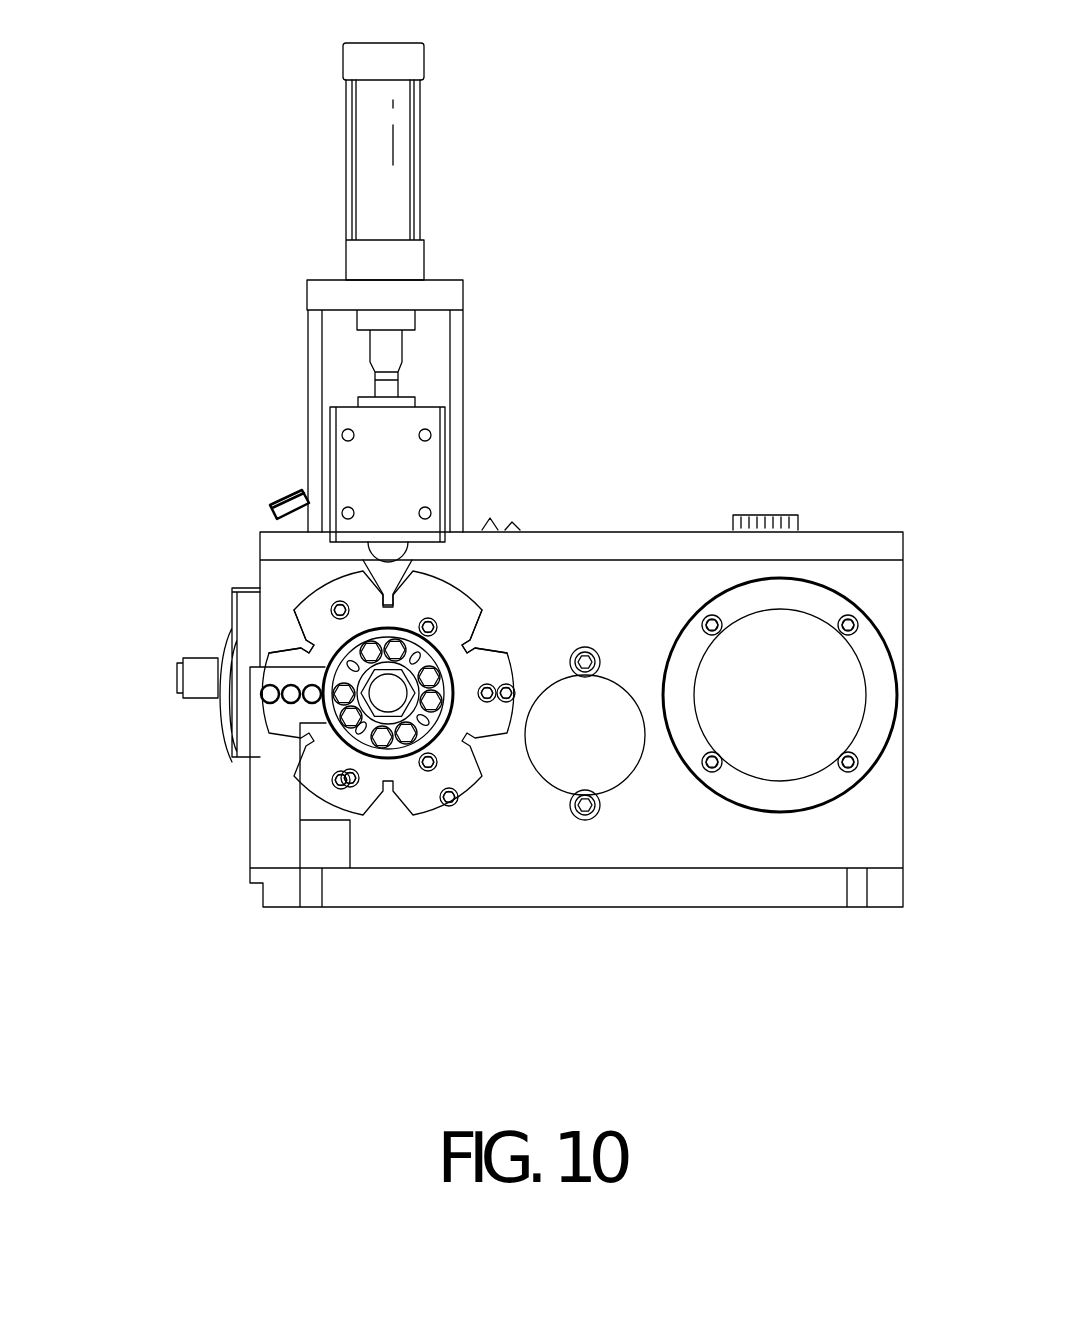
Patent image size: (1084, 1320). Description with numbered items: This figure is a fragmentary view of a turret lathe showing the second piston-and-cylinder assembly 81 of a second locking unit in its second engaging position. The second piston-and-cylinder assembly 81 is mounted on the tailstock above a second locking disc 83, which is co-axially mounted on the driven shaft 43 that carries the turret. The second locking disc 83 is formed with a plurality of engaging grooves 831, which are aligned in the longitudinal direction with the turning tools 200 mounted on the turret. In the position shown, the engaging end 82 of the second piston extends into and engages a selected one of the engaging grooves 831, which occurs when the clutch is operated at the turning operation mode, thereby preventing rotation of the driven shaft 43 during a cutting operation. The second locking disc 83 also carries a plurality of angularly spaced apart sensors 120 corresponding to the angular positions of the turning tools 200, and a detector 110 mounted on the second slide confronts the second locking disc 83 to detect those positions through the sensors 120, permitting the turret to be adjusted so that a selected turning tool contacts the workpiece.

The second piston-and-cylinder assembly 81 is at (400, 158).
The engaging end 82 is at (388, 575).
The second locking disc 83 is at (470, 620).
The engaging grooves 831 is at (452, 597).
The detector 110 is at (290, 648).
The driven shaft 43 is at (387, 700).
The sensors 120 is at (335, 605).
The turning tools 200 is at (195, 652).